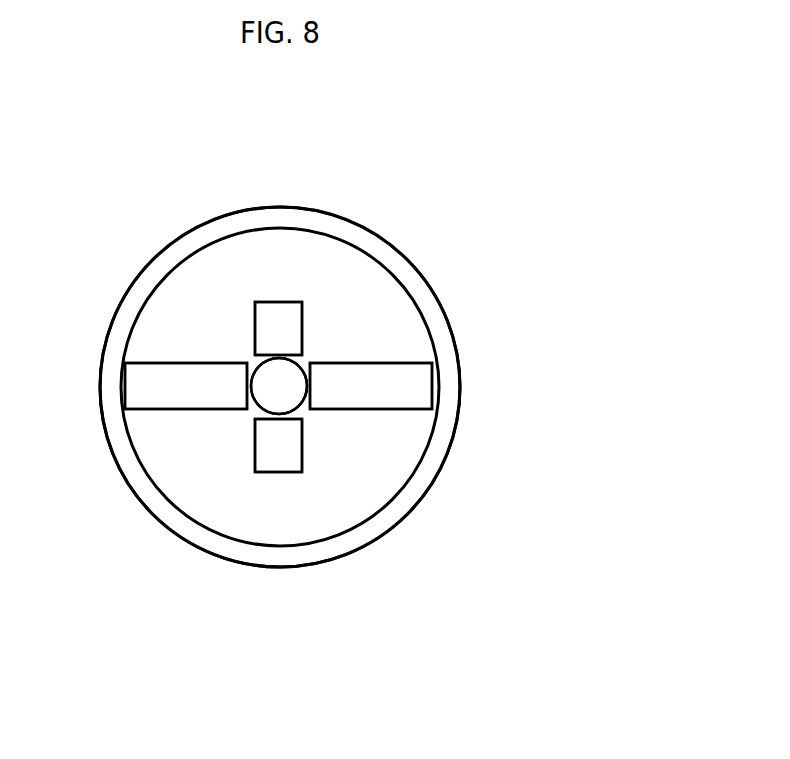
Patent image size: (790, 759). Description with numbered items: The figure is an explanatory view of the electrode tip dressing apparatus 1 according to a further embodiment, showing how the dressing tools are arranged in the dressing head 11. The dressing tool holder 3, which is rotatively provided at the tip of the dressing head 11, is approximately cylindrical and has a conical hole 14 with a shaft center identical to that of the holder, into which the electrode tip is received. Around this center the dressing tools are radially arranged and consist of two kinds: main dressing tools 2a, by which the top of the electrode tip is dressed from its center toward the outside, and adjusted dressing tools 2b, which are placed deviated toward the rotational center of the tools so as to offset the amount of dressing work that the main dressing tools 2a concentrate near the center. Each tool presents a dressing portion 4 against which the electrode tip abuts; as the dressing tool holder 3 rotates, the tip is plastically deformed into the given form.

The electrode tip dressing apparatus 1 is at (390, 190).
The dressing head 11 is at (280, 387).
The dressing tool holder 3 is at (393, 243).
The conical hole 14 is at (347, 510).
The main dressing tools 2a is at (405, 362).
The adjusted dressing tools 2b is at (303, 330).
The dressing portion 4 is at (262, 322).